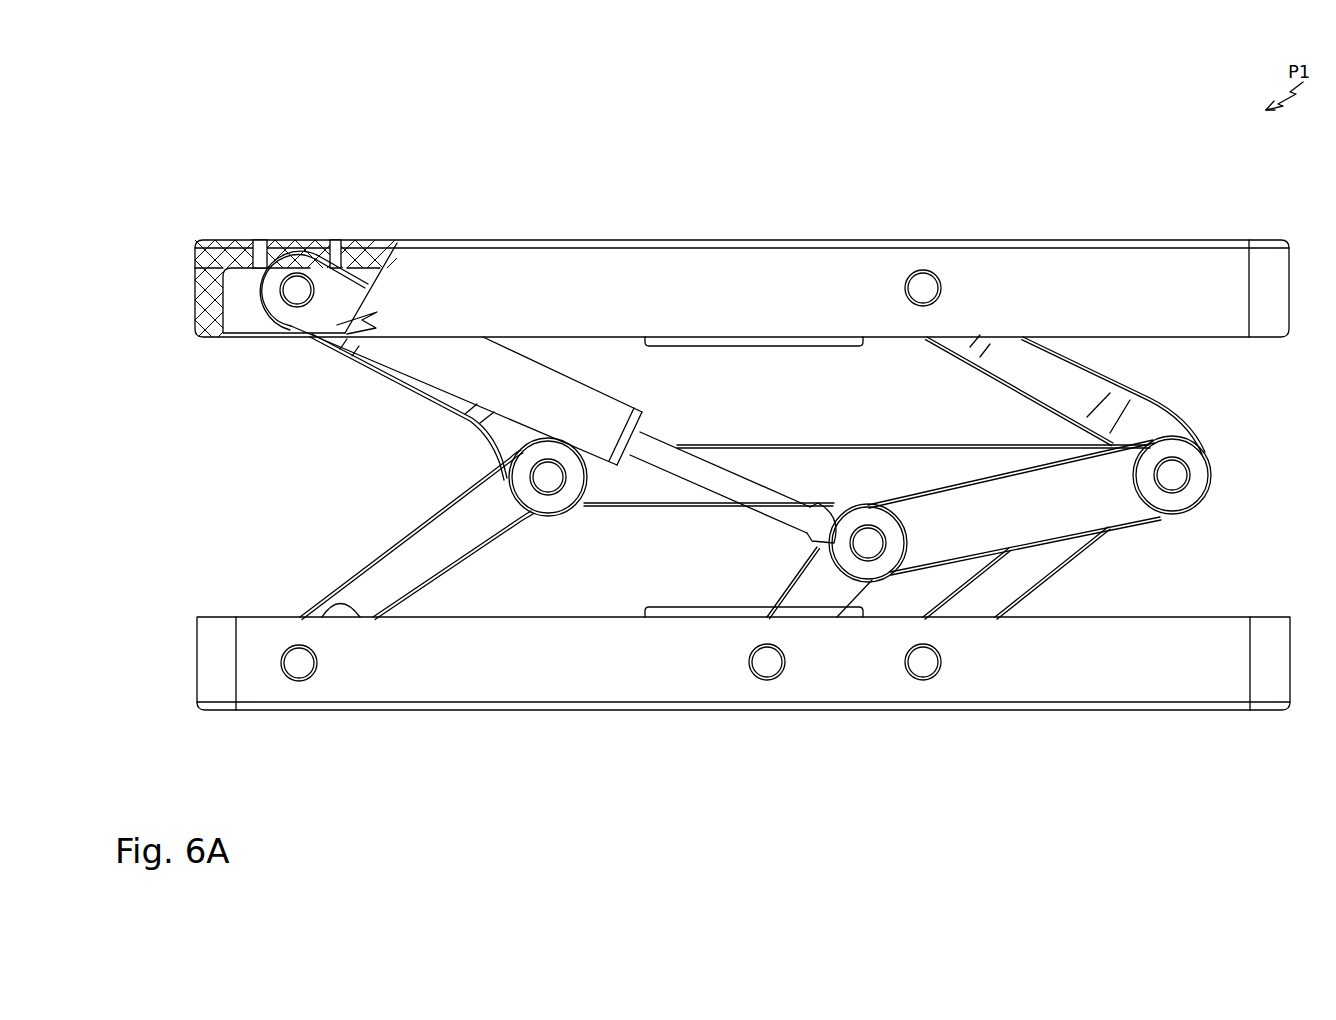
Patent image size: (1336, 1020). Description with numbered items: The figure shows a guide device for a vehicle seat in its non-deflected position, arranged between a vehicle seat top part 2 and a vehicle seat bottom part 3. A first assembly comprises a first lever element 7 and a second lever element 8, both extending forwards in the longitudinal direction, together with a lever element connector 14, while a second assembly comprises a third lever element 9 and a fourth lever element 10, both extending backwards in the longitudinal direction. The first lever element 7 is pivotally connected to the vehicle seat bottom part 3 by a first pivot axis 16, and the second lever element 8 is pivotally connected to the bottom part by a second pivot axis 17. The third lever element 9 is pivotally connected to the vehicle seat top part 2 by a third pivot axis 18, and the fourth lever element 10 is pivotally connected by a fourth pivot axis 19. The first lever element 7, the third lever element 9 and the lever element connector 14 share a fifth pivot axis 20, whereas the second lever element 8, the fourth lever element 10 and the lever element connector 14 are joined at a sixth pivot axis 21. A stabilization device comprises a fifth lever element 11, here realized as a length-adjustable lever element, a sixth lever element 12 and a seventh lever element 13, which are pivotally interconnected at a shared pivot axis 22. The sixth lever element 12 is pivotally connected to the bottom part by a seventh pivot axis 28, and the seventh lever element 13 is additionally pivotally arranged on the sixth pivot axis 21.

The vehicle seat top part 2 is at (725, 275).
The vehicle seat bottom part 3 is at (540, 688).
The first lever element 7 is at (438, 560).
The second lever element 8 is at (1037, 575).
The third lever element 9 is at (420, 396).
The fourth lever element 10 is at (1078, 387).
The fifth lever element 11 is at (590, 402).
The sixth lever element 12 is at (806, 582).
The seventh lever element 13 is at (1106, 502).
The lever element connector 14 is at (796, 461).
The first pivot axis 16 is at (300, 666).
The second pivot axis 17 is at (923, 664).
The third pivot axis 18 is at (297, 282).
The fourth pivot axis 19 is at (922, 279).
The fifth pivot axis 20 is at (550, 480).
The sixth pivot axis 21 is at (1180, 477).
The shared pivot axis 22 is at (868, 538).
The seventh pivot axis 28 is at (768, 664).